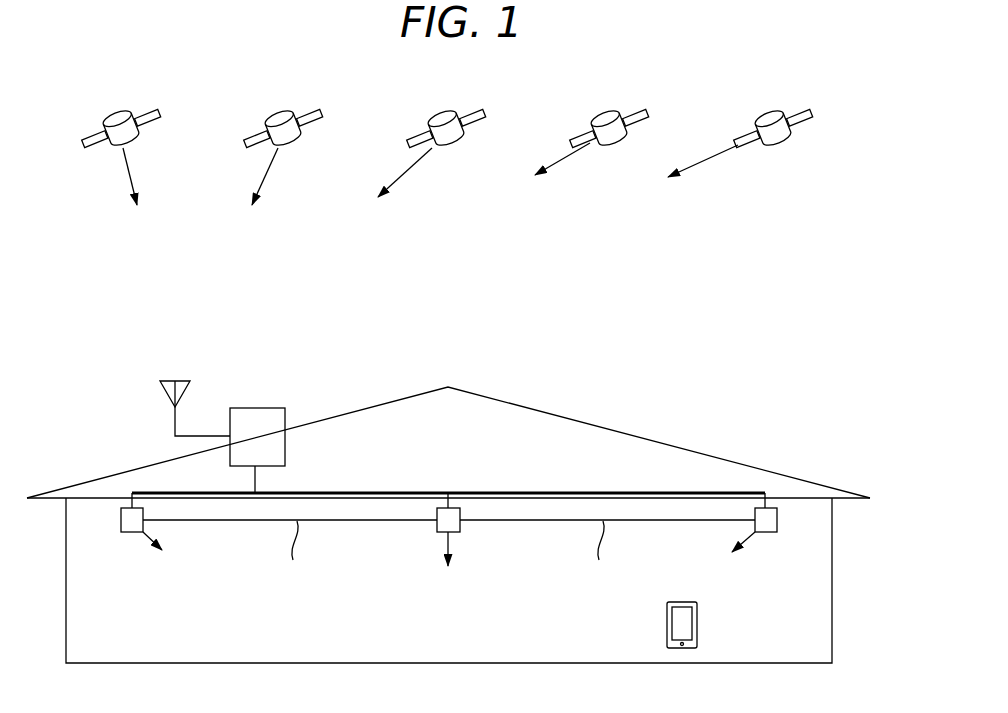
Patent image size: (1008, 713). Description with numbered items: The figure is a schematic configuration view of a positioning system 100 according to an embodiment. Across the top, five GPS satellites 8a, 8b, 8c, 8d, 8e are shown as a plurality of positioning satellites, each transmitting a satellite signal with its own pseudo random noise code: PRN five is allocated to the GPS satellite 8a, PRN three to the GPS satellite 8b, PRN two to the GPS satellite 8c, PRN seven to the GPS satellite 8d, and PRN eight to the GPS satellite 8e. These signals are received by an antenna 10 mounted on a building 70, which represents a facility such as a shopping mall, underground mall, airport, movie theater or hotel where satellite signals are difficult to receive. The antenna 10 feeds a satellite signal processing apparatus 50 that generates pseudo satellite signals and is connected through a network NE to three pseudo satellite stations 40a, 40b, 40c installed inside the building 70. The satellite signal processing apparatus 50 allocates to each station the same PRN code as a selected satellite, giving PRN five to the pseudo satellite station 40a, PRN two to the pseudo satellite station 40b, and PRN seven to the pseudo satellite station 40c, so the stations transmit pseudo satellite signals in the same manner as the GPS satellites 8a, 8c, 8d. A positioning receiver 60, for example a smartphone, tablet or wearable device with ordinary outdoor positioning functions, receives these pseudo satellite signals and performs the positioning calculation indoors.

The positioning system 100 is at (900, 84).
The GPS satellite 8a is at (107, 115).
The GPS satellite 8b is at (269, 115).
The GPS satellite 8c is at (432, 115).
The GPS satellite 8d is at (595, 115).
The GPS satellite 8e is at (759, 114).
The antenna 10 is at (175, 380).
The satellite signal processing apparatus 50 is at (255, 408).
The building 70 is at (687, 442).
The pseudo satellite station 40a is at (121, 523).
The pseudo satellite station 40b is at (437, 523).
The pseudo satellite station 40c is at (768, 523).
The positioning receiver 60 is at (697, 622).